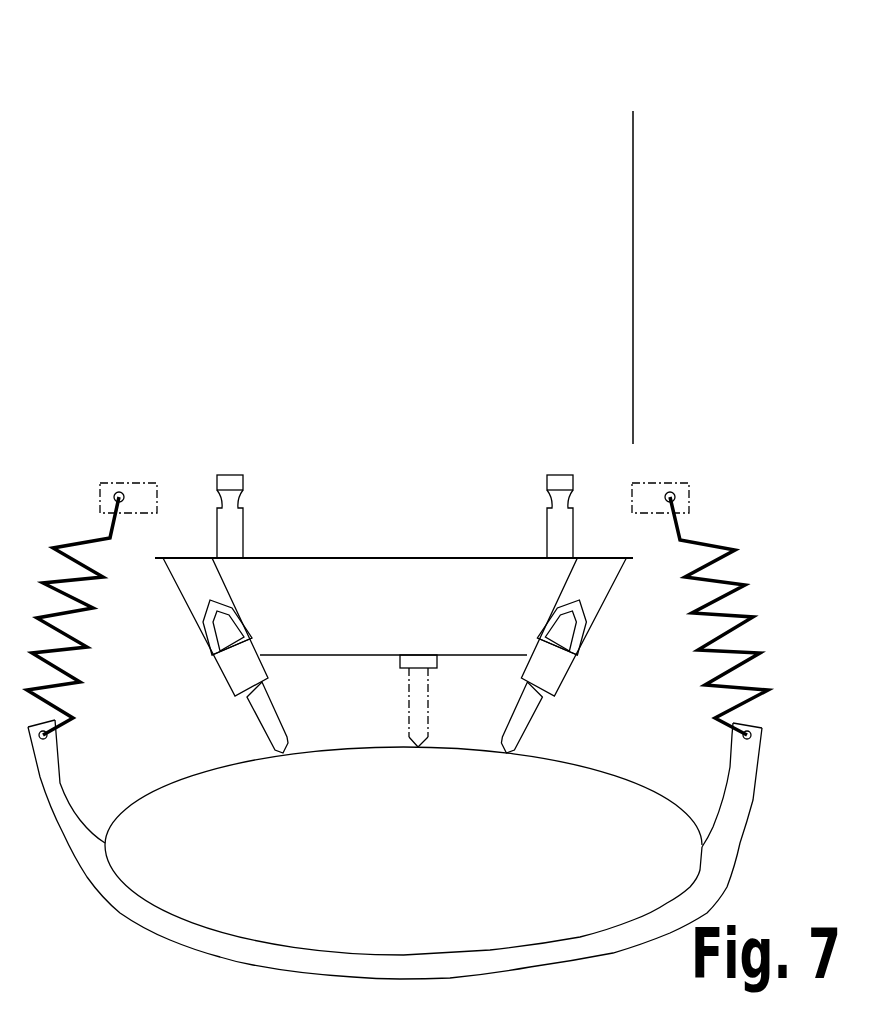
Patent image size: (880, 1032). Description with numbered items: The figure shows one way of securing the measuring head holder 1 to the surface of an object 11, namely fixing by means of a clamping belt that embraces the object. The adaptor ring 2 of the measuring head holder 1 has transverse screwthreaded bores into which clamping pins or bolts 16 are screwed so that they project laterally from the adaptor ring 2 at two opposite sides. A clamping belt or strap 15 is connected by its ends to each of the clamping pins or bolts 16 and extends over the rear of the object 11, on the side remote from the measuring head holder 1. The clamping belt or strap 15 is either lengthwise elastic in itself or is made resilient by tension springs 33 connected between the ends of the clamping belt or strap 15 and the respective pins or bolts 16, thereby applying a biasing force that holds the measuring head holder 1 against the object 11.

The measuring head holder 1 is at (698, 133).
The adaptor ring 2 is at (394, 516).
The object 11 is at (403, 851).
The clamping belt or strap 15 is at (200, 937).
The clamping pins or bolts 16 is at (139, 483).
The tension springs 33 is at (70, 617).